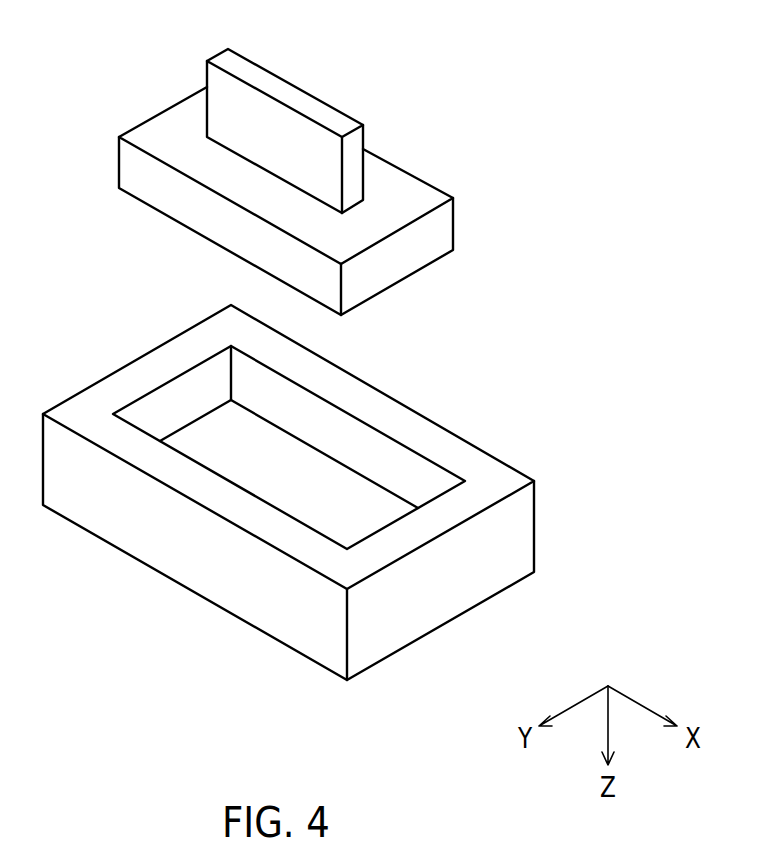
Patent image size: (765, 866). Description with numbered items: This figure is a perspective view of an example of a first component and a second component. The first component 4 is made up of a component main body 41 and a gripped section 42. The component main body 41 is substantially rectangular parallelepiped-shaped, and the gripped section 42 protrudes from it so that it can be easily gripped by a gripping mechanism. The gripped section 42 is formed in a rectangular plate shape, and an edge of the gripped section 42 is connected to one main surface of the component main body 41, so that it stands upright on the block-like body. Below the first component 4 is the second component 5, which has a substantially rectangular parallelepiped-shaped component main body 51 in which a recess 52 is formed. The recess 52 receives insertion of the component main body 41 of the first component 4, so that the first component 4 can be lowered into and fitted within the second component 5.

The first component 4 is at (318, 166).
The component main body 41 is at (411, 257).
The gripped section 42 is at (312, 93).
The second component 5 is at (309, 511).
The component main body 51 is at (414, 616).
The recess 52 is at (377, 452).